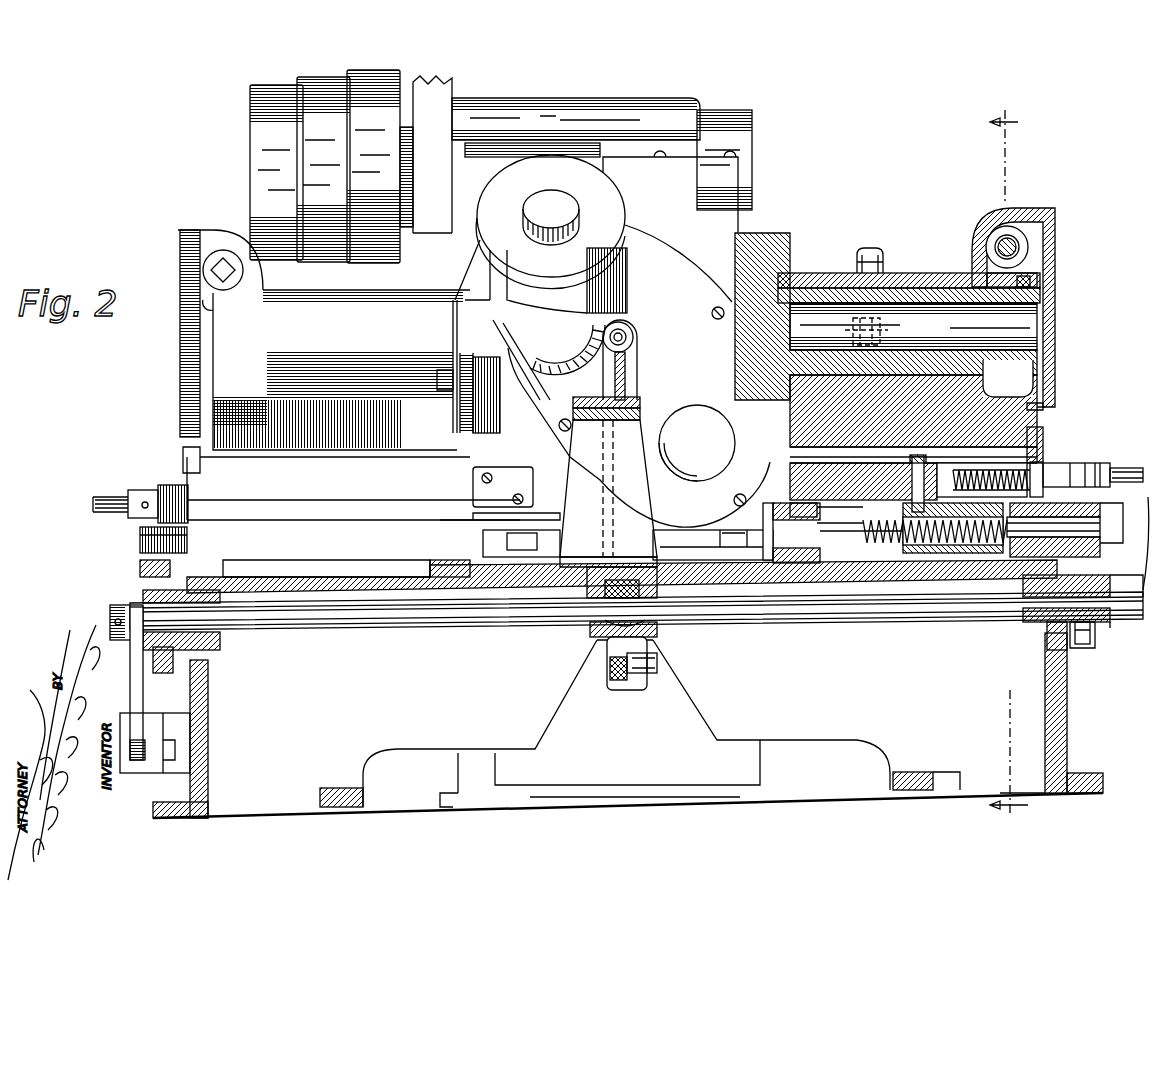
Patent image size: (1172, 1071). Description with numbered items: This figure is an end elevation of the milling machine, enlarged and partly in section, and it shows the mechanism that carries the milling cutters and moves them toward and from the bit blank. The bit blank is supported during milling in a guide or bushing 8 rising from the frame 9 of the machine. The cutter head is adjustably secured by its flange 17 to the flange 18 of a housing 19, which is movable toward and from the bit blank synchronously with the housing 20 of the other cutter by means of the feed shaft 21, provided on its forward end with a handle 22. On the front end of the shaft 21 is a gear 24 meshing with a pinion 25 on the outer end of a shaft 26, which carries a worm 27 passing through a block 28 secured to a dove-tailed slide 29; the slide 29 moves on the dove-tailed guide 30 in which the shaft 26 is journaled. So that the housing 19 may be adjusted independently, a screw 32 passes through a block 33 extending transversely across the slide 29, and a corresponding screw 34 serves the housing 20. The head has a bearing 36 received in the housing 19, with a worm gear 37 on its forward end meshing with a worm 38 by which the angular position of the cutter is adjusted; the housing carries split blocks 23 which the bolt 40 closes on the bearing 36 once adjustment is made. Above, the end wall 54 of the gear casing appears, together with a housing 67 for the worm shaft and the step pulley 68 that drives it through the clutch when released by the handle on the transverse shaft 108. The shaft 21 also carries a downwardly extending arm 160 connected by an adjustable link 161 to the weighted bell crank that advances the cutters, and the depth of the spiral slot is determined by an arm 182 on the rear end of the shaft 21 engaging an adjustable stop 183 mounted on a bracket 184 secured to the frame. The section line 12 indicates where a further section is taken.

The guide or bushing 8 is at (632, 343).
The frame 9 is at (628, 725).
The section line 12- 12 is at (1009, 466).
The flange 17 is at (757, 243).
The flange 18 is at (776, 258).
The housing 19 is at (825, 273).
The housing 20 is at (368, 405).
The feed shaft 21 is at (923, 605).
The handle 22 is at (1157, 503).
The split blocks 23 is at (913, 326).
The gear 24 is at (1083, 647).
The pinion 25 is at (1095, 548).
The shaft 26 is at (1097, 528).
The worm 27 is at (877, 547).
The block 28 is at (967, 580).
The dove-tailed slide 29 is at (790, 477).
The dove-tailed guide 30 is at (800, 565).
The screw 32 is at (1062, 470).
The block 33 is at (1045, 408).
The screw 34 is at (107, 497).
The bearing 36 is at (932, 300).
The worm gear 37 is at (1022, 267).
The worm 38 is at (1018, 245).
The bolt 40 is at (876, 262).
The end wall 54 is at (596, 228).
The housing 67 is at (700, 117).
The step pulley 68 is at (268, 150).
The transverse shaft 108 is at (542, 513).
The arm 160 is at (637, 652).
The adjustable link 161 is at (620, 667).
The arm 182 is at (133, 697).
The adjustable stop 183 is at (137, 762).
The bracket 184 is at (153, 728).